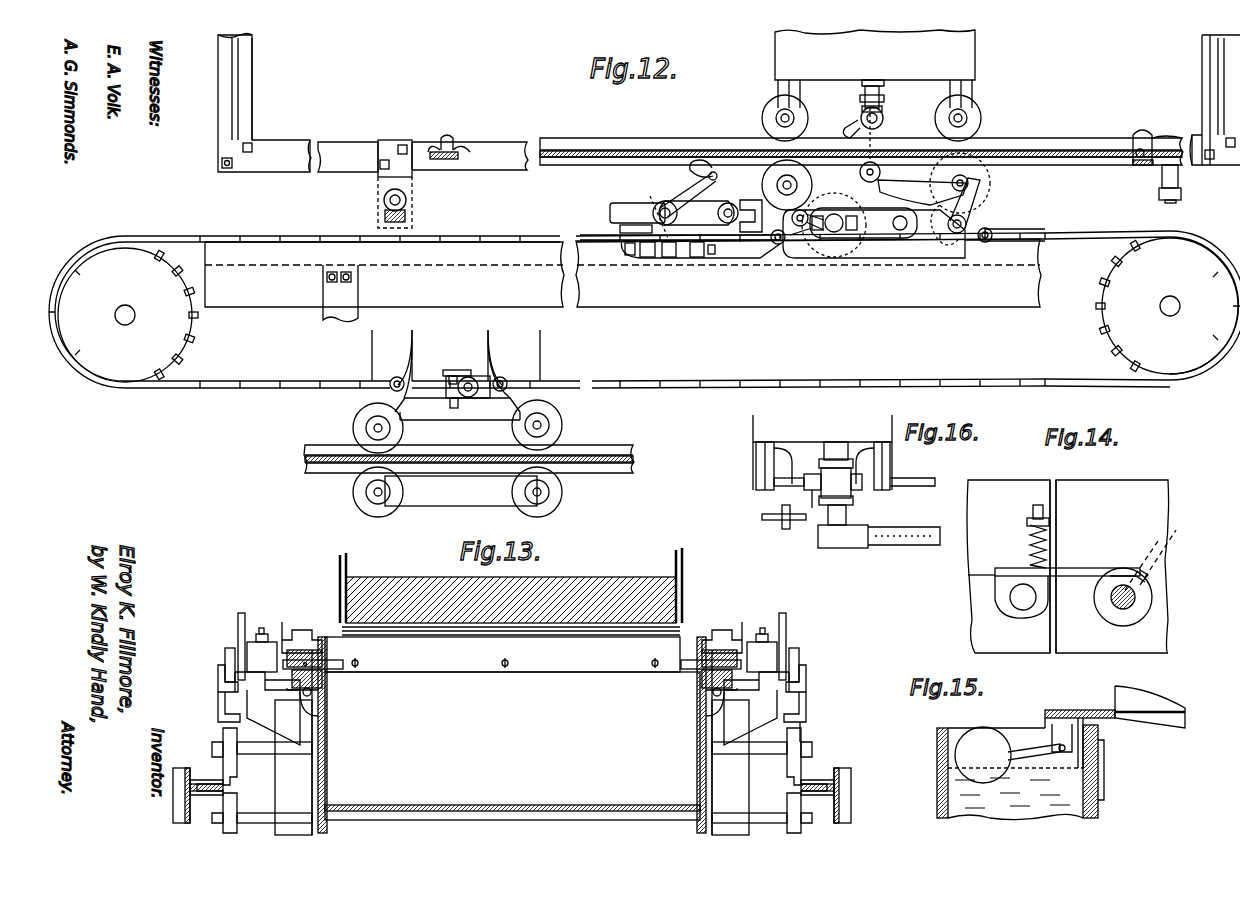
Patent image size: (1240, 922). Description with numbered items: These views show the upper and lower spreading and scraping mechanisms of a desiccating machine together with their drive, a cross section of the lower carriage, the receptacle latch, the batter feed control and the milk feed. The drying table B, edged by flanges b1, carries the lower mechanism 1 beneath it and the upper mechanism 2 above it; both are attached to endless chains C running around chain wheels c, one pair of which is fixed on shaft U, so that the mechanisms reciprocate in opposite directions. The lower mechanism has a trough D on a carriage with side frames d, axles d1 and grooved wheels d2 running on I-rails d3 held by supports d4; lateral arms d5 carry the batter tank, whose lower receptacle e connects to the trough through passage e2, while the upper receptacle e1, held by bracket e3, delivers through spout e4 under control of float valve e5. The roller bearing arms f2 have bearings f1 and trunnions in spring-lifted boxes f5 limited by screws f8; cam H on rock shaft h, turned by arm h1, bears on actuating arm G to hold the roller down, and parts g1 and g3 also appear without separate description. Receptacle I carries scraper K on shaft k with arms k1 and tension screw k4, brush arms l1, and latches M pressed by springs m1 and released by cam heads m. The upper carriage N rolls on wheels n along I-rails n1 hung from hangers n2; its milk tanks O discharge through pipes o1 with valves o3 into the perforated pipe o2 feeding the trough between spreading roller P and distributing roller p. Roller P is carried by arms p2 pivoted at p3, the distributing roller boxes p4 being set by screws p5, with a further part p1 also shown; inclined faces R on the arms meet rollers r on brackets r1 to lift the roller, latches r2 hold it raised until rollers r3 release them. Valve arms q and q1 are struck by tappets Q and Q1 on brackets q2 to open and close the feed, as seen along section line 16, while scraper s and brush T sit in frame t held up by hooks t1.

In FIG. 12, the hangers or supports n2 is at (252, 113).
In FIG. 12, the I-rails n1 is at (612, 118).
In FIG. 16, the I-rails n1 is at (770, 518).
In FIG. 12, the grooved wheels n is at (762, 185).
In FIG. 12, the tappet arms Q is at (444, 138).
In FIG. 16, the tappet arms Q is at (786, 505).
In FIG. 12, the tappet arms Q1 is at (1148, 130).
In FIG. 12, the valve arm q is at (848, 125).
In FIG. 16, the valve arm q is at (808, 474).
In FIG. 12, the valve arm q1 is at (854, 124).
In FIG. 16, the valve arm q1 is at (862, 482).
In FIG. 12, the brackets q2 is at (456, 152).
In FIG. 16, the brackets q2 is at (800, 520).
In FIG. 12, the rollers r is at (406, 200).
In FIG. 12, the brackets r1 is at (375, 212).
In FIG. 12, the spring-pressed latches r2 is at (955, 175).
In FIG. 12, the rollers r3 is at (1160, 196).
In FIG. 12, the milk tanks or reservoirs O is at (875, 69).
In FIG. 16, the milk tanks or reservoirs O is at (822, 451).
In FIG. 12, the pulley 16 is at (873, 80).
In FIG. 12, the upper spreading and scraping mechanism 2 is at (750, 98).
In FIG. 12, the truck or carriage N is at (762, 120).
In FIG. 12, the discharge pipes o1 is at (865, 92).
In FIG. 16, the discharge pipes o1 is at (842, 452).
In FIG. 16, the horizontal pipe o2 is at (905, 527).
In FIG. 12, the valves o3 is at (883, 118).
In FIG. 16, the valves o3 is at (832, 478).
In FIG. 12, the spreading roller P is at (880, 186).
In FIG. 12, the distributing roller p is at (800, 234).
In FIG. 12, the crank p1 is at (950, 228).
In FIG. 12, the arms p2 is at (866, 240).
In FIG. 12, the pivot p3 is at (798, 228).
In FIG. 12, the journal boxes p4 is at (834, 232).
In FIG. 12, the adjusting screws p5 is at (817, 230).
In FIG. 12, the inclined faces R is at (883, 233).
In FIG. 13, the inclined faces R is at (600, 580).
In FIG. 12, the scraper or knife s is at (648, 198).
In FIG. 12, the frame t is at (665, 202).
In FIG. 12, the hooks t1 is at (705, 160).
In FIG. 12, the brush T is at (751, 209).
In FIG. 12, the drying table B is at (1040, 282).
In FIG. 12, the flanges or strips b1 is at (1018, 256).
In FIG. 13, the flanges or strips b1 is at (340, 560).
In FIG. 12, the endless chains C is at (285, 233).
In FIG. 13, the endless chains C is at (802, 710).
In FIG. 12, the chain wheels c is at (648, 310).
In FIG. 12, the shaft U is at (115, 308).
In FIG. 12, the bracket g3 is at (324, 310).
In FIG. 12, the trough or receptacle D is at (540, 345).
In FIG. 14, the trough or receptacle D is at (1150, 510).
In FIG. 13, the lower spreading and scraping mechanism 1 is at (512, 735).
In FIG. 12, the bearings f1 is at (400, 374).
In FIG. 12, the bearing boxes f5 is at (452, 370).
In FIG. 12, the adjustable screws f8 is at (453, 408).
In FIG. 13, the adjustable screws f8 is at (262, 628).
In FIG. 12, the lateral arms d5 is at (475, 378).
In FIG. 12, the pipes or passages e2 is at (468, 397).
In FIG. 12, the frames d is at (450, 506).
In FIG. 13, the frames d is at (275, 790).
In FIG. 12, the axles d1 is at (548, 420).
In FIG. 13, the axles d1 is at (312, 765).
In FIG. 12, the grooved wheels d2 is at (365, 420).
In FIG. 13, the grooved wheels d2 is at (223, 730).
In FIG. 12, the I-rails d3 is at (620, 445).
In FIG. 13, the I-rails d3 is at (205, 780).
In FIG. 13, the posts or supports d4 is at (183, 768).
In FIG. 13, the knife or scraper K is at (502, 649).
In FIG. 13, the receptacle I is at (548, 805).
In FIG. 14, the receptacle I is at (1000, 485).
In FIG. 13, the rock shaft h is at (262, 694).
In FIG. 14, the rock shaft h is at (1112, 600).
In FIG. 13, the lever or arm h1 is at (241, 613).
In FIG. 13, the cam H is at (225, 652).
In FIG. 13, the actuating arm G is at (218, 668).
In FIG. 13, the foot g1 is at (218, 705).
In FIG. 13, the bearing arms f2 is at (300, 630).
In FIG. 13, the arms l1 is at (312, 640).
In FIG. 13, the shaft k is at (700, 672).
In FIG. 13, the arm k1 is at (310, 712).
In FIG. 13, the adjustable screw k4 is at (312, 692).
In FIG. 14, the latch M is at (1082, 568).
In FIG. 14, the cam heads m is at (1120, 626).
In FIG. 14, the spring m1 is at (1028, 545).
In FIG. 15, the lower receptacle e is at (937, 748).
In FIG. 15, the upper receptacle e1 is at (1150, 700).
In FIG. 15, the bracket e3 is at (1104, 765).
In FIG. 15, the discharge spout e4 is at (1098, 712).
In FIG. 15, the float-controlled valve e5 is at (1052, 732).